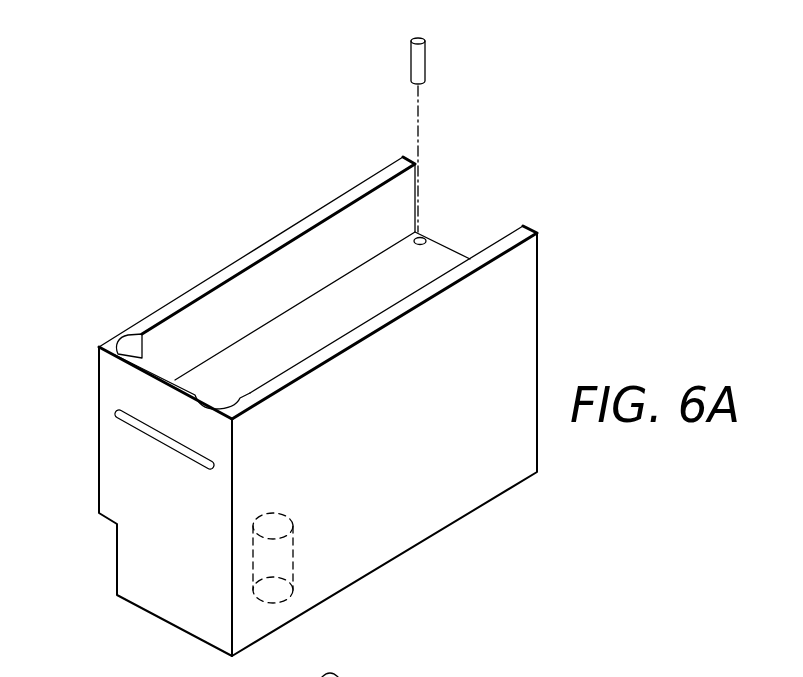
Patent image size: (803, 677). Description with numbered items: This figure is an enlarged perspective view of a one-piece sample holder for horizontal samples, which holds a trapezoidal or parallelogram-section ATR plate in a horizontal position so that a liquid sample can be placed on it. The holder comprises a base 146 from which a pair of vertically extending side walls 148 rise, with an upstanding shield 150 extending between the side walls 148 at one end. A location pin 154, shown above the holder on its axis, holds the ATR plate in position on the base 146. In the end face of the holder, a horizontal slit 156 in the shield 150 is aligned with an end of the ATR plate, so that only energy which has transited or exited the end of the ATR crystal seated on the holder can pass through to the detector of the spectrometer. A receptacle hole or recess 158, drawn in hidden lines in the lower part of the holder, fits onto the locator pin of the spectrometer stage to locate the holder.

The base 146 is at (440, 258).
The side wall 148 is at (262, 247).
The shield 150 is at (173, 384).
The location pin 154 is at (427, 54).
The horizontal slit 156 is at (130, 423).
The receptacle hole or recess 158 is at (292, 588).